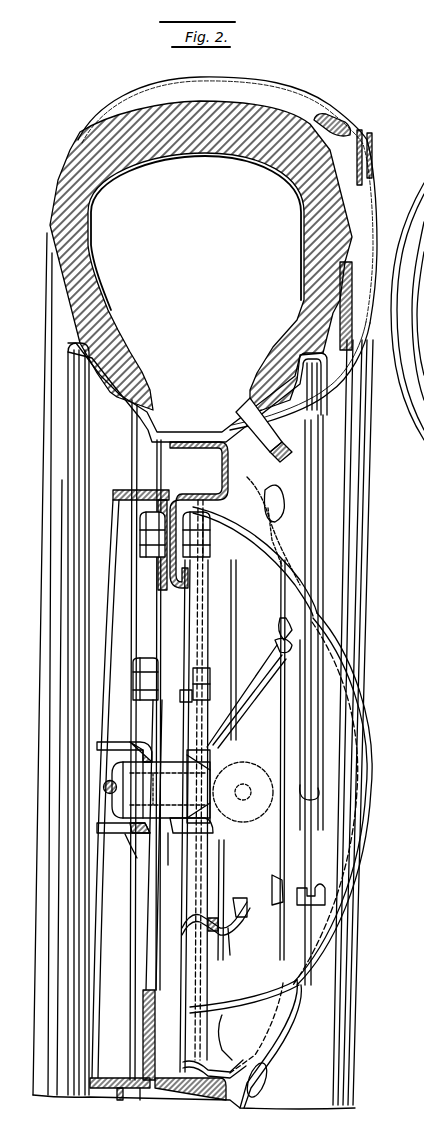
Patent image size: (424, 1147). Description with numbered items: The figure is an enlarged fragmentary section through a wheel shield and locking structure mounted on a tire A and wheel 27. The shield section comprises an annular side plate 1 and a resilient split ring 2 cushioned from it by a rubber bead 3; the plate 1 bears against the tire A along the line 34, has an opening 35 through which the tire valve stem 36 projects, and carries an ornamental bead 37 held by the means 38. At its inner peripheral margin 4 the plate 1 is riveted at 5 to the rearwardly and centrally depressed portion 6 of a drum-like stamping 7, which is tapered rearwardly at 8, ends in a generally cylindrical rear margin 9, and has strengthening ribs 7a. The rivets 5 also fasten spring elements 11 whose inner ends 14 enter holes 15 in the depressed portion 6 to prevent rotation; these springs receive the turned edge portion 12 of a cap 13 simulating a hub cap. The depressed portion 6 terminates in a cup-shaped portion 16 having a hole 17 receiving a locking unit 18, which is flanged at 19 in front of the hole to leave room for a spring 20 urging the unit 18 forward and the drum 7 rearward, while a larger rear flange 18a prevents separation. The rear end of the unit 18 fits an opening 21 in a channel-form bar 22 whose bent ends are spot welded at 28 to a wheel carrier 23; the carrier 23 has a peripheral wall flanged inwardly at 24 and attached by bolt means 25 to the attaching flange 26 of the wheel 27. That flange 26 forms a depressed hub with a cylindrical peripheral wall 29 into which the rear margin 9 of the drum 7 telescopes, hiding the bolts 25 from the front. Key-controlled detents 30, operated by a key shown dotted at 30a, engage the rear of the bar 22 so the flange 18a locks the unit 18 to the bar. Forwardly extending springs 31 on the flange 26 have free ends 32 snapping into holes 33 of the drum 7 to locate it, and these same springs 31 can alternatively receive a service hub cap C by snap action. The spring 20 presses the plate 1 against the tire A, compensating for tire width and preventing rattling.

The tire A is at (62, 197).
The side plate 1 is at (376, 214).
The resilient split ring 2 is at (300, 88).
The bead 3 is at (316, 116).
The line of engagement 34 is at (327, 160).
The wheel 27 is at (59, 410).
The opening 35 is at (283, 434).
The tire valve stem 36 is at (292, 452).
The wheel carrier 23 is at (121, 489).
The cylindrical peripheral wall 29 is at (202, 492).
The inwardly flanged portion 24 is at (158, 580).
The bolt means 25 is at (150, 540).
The attaching flange 26 is at (205, 606).
The tapered portion 8 is at (292, 560).
The strengthening ribs 7a is at (268, 572).
The bead 37 is at (280, 497).
The means 38 is at (284, 532).
The rivets 5 is at (282, 620).
The inner end 14 is at (278, 648).
The hole 15 is at (278, 650).
The depressed portion 6 is at (244, 712).
The inner peripheral margin 4 is at (292, 689).
The cap 13 is at (370, 725).
The hub cap C is at (358, 756).
The turned edge portion 12 is at (312, 790).
The hole 17 is at (166, 790).
The bar 22 is at (122, 760).
The spot welds 28 is at (110, 780).
The detents 30 is at (132, 758).
The cup-shaped portion 16 is at (178, 782).
The flange 19 is at (200, 770).
The key 30a is at (258, 764).
The flange 18a is at (178, 691).
The locking unit 18 is at (214, 826).
The spring 20 is at (166, 834).
The opening 21 is at (138, 836).
The cylindrical rear margin 9 is at (198, 876).
The springs 31 is at (210, 918).
The holes 33 is at (250, 922).
The free ends 32 is at (240, 930).
The spring elements 11 is at (318, 888).
The drum-like stamping 7 is at (281, 1028).